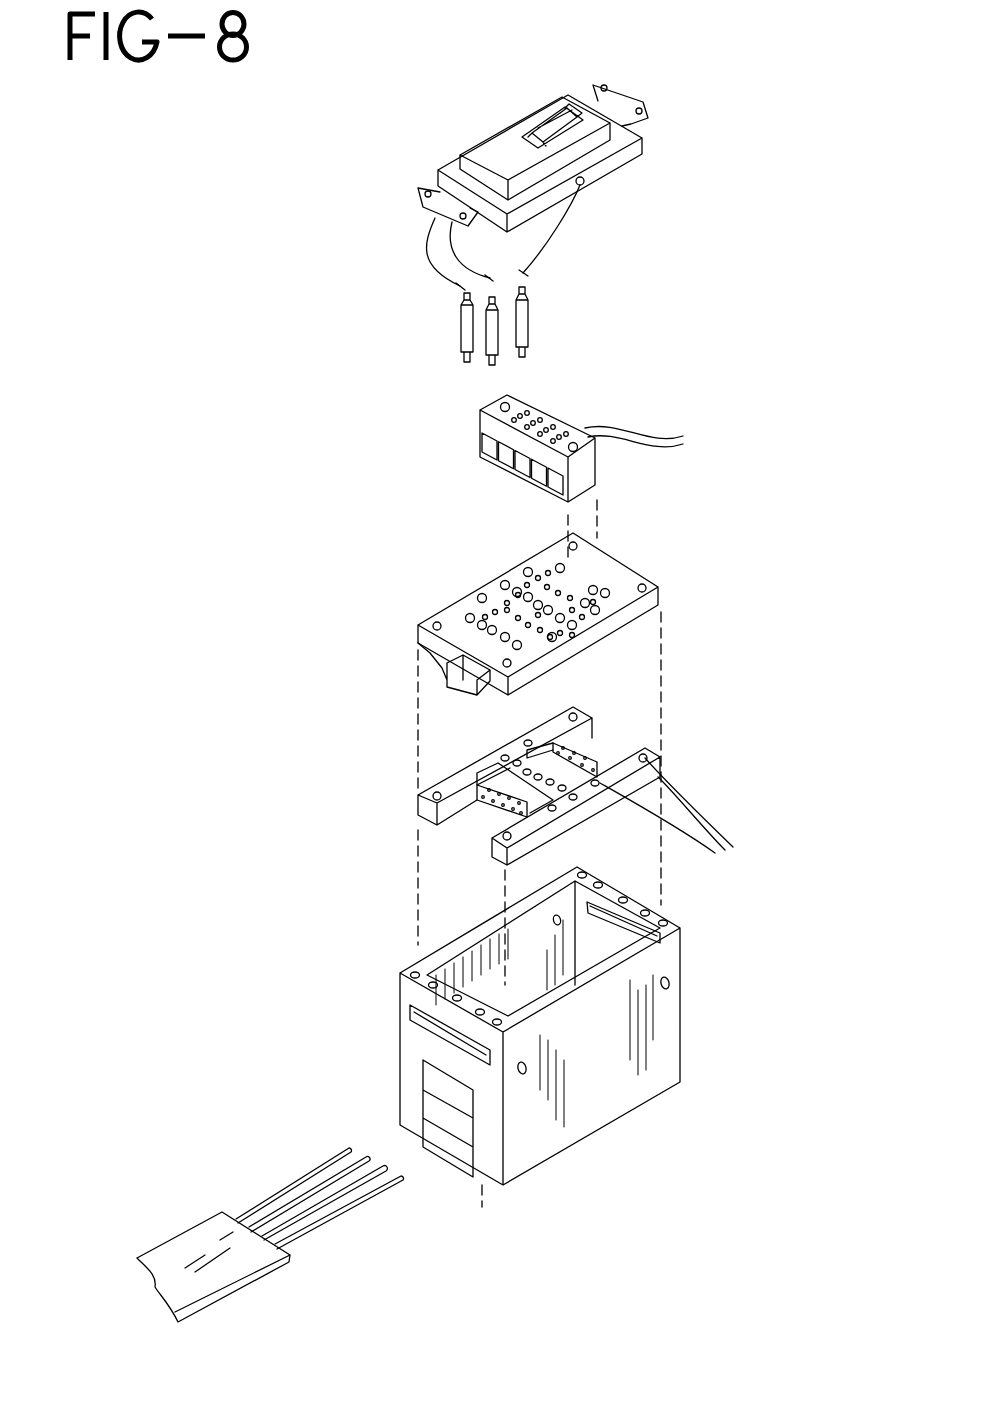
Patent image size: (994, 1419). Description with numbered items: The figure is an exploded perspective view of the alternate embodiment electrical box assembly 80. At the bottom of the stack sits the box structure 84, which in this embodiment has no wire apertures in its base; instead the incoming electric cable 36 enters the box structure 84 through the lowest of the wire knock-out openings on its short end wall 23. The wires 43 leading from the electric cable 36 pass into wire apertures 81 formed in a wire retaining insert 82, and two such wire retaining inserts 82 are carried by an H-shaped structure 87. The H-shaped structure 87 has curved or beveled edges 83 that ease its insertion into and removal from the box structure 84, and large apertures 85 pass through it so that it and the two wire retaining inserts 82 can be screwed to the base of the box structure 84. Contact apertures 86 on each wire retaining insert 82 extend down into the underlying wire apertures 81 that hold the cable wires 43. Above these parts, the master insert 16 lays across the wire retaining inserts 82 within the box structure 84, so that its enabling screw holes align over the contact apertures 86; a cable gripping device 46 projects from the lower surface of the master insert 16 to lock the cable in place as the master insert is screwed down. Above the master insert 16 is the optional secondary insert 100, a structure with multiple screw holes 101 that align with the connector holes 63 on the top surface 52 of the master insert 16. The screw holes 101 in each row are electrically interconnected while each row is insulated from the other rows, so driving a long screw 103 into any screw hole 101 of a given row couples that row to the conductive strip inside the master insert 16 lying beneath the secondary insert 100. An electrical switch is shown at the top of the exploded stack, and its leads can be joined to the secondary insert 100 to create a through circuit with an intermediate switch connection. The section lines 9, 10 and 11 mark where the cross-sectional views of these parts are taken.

The section line 9- 9 is at (510, 520).
The section line 10- 10 is at (650, 412).
The section line 11- 11 is at (582, 30).
The master insert 16 is at (565, 625).
The short end wall 23 is at (405, 1045).
The electric cable 36 is at (253, 1234).
The wires 43 is at (338, 1212).
The cable gripping device 46 is at (458, 690).
The top surface 52 is at (453, 613).
The connector holes 63 is at (582, 592).
The electrical box assembly 80 is at (597, 225).
The wire apertures 81 is at (493, 805).
The wire retaining insert 82 is at (567, 761).
The curved or beveled edges 83 is at (568, 772).
The box structure 84 is at (536, 1026).
The large apertures 85 is at (673, 825).
The contact apertures 86 is at (590, 762).
The H-shaped structure 87 is at (663, 760).
The secondary insert 100 is at (611, 456).
The screw holes 101 is at (659, 435).
The long screw 103 is at (547, 307).